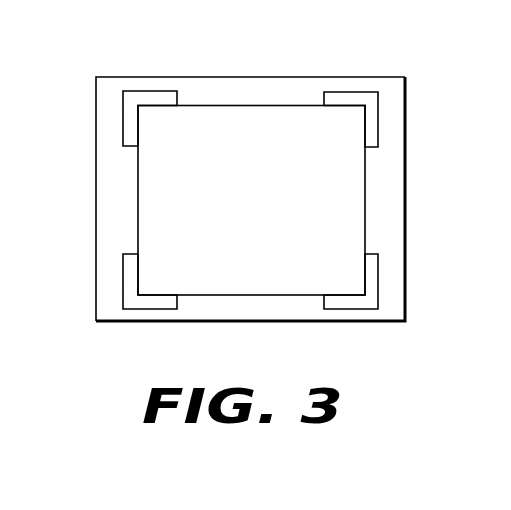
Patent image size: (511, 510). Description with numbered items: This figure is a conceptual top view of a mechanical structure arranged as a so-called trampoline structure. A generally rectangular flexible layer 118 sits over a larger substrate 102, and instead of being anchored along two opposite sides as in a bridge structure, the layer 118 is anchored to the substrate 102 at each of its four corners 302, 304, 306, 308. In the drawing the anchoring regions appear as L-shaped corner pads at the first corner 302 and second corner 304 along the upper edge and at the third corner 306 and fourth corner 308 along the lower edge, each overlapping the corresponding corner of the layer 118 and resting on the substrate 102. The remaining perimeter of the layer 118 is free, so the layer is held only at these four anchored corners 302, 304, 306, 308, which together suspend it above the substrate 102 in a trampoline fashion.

The substrate 102 is at (394, 204).
The layer 118 is at (263, 214).
The corner 302 is at (143, 97).
The corner 304 is at (356, 98).
The corner 306 is at (358, 303).
The corner 308 is at (145, 302).